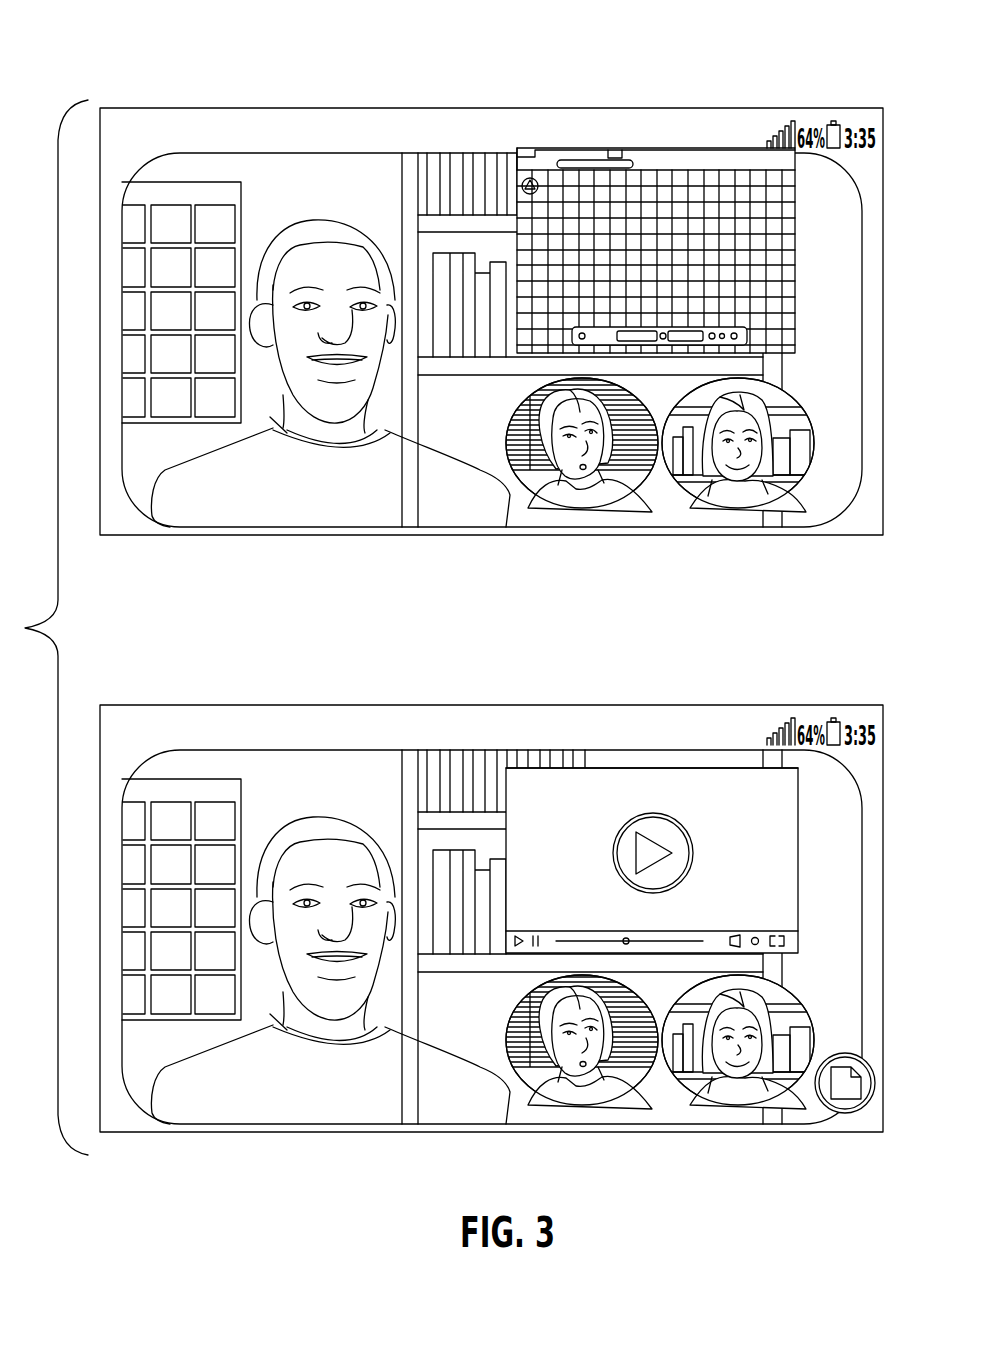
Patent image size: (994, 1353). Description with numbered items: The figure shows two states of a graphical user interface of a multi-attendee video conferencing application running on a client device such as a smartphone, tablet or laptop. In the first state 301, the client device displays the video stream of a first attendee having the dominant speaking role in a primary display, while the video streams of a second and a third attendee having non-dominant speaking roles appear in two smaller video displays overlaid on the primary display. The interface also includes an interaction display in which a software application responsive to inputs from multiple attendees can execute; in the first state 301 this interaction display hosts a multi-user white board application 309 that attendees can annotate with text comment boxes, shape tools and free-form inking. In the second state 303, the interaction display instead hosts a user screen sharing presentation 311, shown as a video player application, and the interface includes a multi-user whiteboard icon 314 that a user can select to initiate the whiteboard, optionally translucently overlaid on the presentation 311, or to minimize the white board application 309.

The first depicted state of the graphical user interface 301 is at (121, 72).
The second depicted state of the graphical user interface 303 is at (506, 899).
The multi-user white board application 309 is at (795, 268).
The user screen sharing presentation 311 is at (714, 860).
The multi-user whiteboard icon 314 is at (845, 1116).